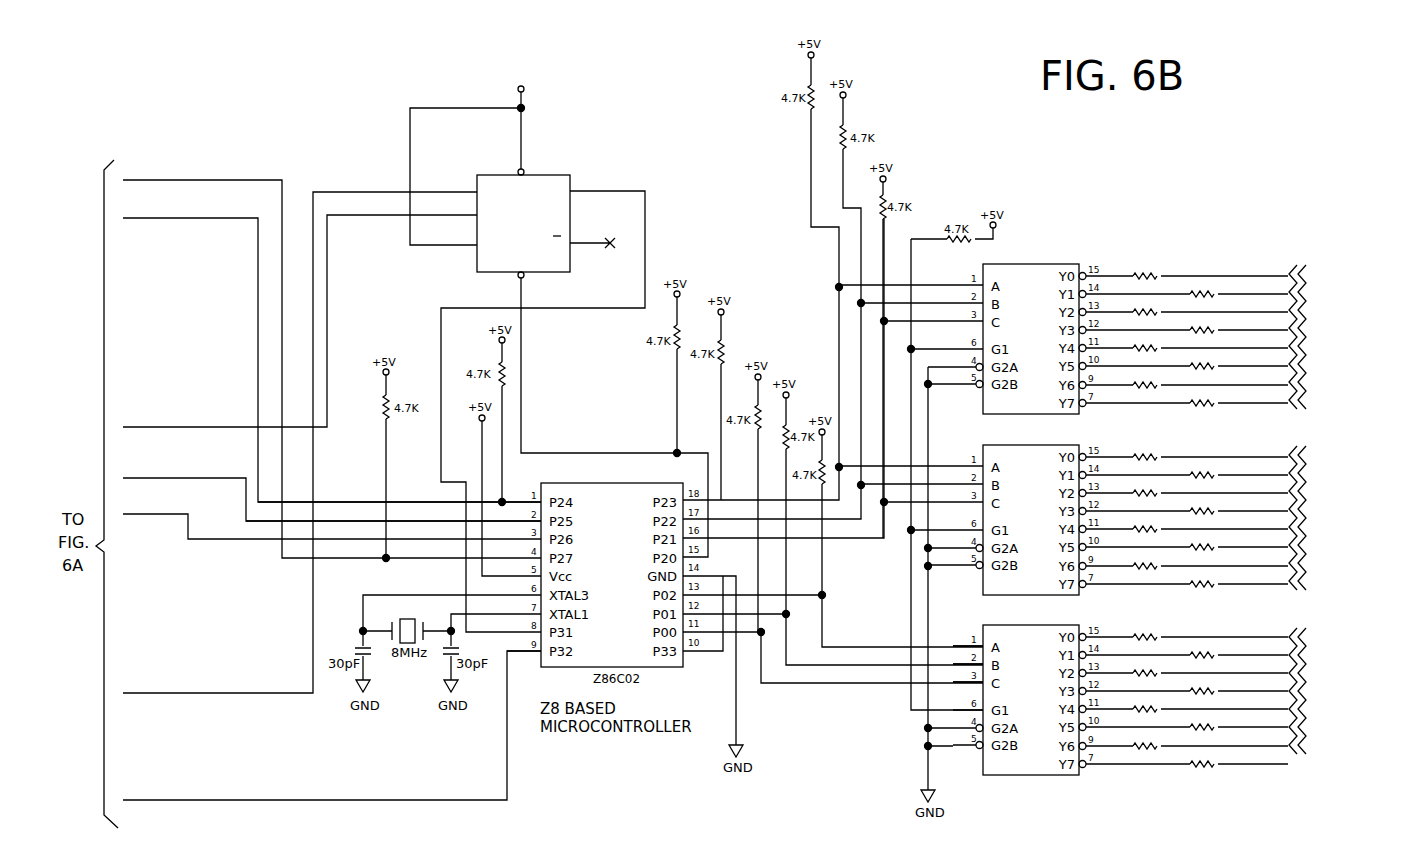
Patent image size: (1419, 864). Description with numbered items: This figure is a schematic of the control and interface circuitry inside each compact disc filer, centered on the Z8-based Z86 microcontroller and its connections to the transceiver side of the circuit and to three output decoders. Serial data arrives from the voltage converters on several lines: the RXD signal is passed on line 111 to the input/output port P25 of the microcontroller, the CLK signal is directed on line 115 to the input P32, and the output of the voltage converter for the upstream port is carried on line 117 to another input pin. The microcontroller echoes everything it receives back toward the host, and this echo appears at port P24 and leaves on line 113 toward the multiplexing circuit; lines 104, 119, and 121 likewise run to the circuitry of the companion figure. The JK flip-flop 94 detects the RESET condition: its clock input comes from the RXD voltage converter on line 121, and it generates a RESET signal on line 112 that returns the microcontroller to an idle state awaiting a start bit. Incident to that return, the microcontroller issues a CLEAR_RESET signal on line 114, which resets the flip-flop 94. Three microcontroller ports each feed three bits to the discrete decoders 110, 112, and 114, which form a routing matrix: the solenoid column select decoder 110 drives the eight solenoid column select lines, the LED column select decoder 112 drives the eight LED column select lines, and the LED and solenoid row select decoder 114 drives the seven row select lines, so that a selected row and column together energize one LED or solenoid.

The line 104 is at (161, 179).
The line 113 is at (166, 218).
The line 119 is at (392, 192).
The line 121 is at (373, 218).
The line 111 is at (157, 478).
The line 117 is at (160, 514).
The line 115 is at (160, 800).
The J-K flip-flop circuit 94 is at (540, 183).
The LED column select decoder 112 is at (645, 233).
The LED and solenoid row select decoder 114 is at (548, 453).
The solenoid column select decoder 110 is at (1033, 264).
The microprocessor port P24 is at (362, 501).
The input/output port P25 is at (407, 520).
The microprocessor input P32 is at (508, 756).